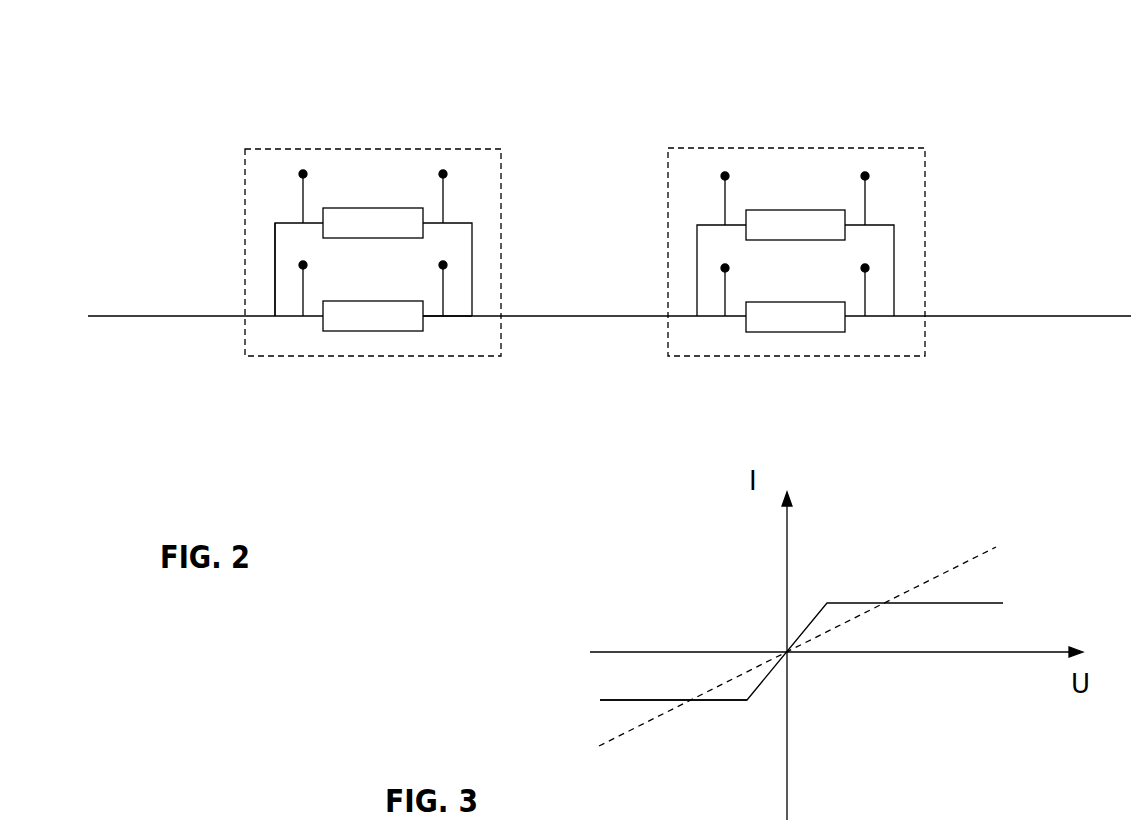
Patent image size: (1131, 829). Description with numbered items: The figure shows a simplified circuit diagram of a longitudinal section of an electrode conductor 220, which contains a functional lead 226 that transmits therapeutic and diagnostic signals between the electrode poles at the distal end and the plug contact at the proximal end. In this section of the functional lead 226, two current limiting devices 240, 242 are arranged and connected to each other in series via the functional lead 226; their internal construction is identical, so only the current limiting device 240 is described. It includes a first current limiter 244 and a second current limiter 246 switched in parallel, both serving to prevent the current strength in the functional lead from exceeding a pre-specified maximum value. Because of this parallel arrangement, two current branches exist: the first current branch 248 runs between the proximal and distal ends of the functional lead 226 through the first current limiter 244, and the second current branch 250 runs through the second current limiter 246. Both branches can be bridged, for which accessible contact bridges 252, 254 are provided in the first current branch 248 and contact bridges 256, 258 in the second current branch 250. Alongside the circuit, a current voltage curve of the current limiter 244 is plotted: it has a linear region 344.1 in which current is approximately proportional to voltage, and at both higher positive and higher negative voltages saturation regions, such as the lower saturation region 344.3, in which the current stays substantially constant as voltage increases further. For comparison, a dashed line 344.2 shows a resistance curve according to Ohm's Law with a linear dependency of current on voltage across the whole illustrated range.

In FIG. 2, the electrode conductor 220 is at (998, 113).
In FIG. 2, the functional lead 226 is at (140, 316).
In FIG. 2, the current limiting device 240 is at (278, 357).
In FIG. 2, the current limiting device 242 is at (892, 357).
In FIG. 2, the first current limiter 244 is at (383, 331).
In FIG. 2, the second current limiter 246 is at (358, 208).
In FIG. 2, the first current branch 248 is at (455, 318).
In FIG. 2, the second current branch 250 is at (275, 258).
In FIG. 2, the contact bridge 252 is at (303, 265).
In FIG. 2, the contact bridge 254 is at (443, 265).
In FIG. 2, the contact bridge 256 is at (305, 172).
In FIG. 2, the contact bridge 258 is at (445, 172).
In FIG. 3, the linear region 344.1 is at (773, 668).
In FIG. 3, the linear characteristic 344.2 is at (985, 602).
In FIG. 3, the saturation region 344.3 is at (610, 698).